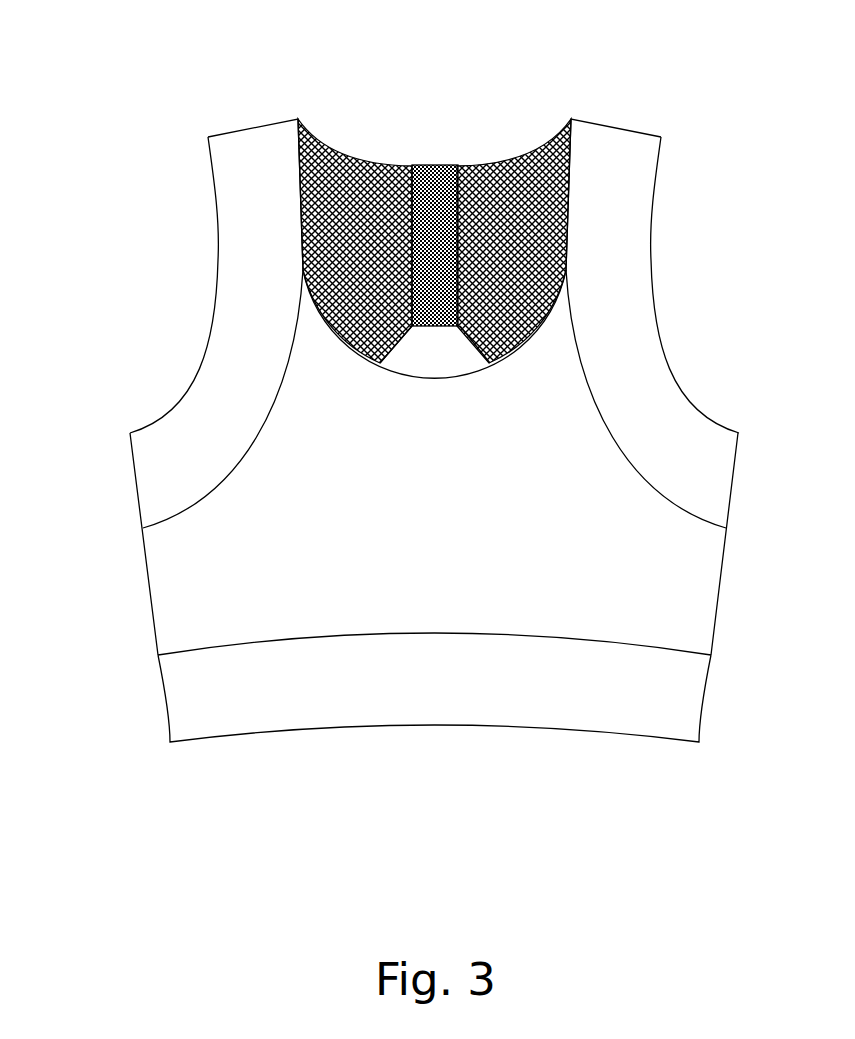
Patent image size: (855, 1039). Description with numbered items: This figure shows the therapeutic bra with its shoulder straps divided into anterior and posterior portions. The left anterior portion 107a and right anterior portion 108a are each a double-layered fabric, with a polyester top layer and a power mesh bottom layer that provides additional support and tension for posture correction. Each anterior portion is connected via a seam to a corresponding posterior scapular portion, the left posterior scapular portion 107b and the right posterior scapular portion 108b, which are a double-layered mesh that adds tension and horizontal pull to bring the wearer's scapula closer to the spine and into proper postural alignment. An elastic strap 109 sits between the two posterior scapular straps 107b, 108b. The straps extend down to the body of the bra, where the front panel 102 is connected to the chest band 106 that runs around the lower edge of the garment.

The front panel 102 is at (175, 603).
The chest band 106 is at (187, 712).
The left anterior portion 107a is at (644, 272).
The left posterior scapular portion 107b is at (533, 150).
The right anterior portion 108a is at (225, 272).
The right posterior scapular portion 108b is at (350, 157).
The elastic strap 109 is at (437, 177).